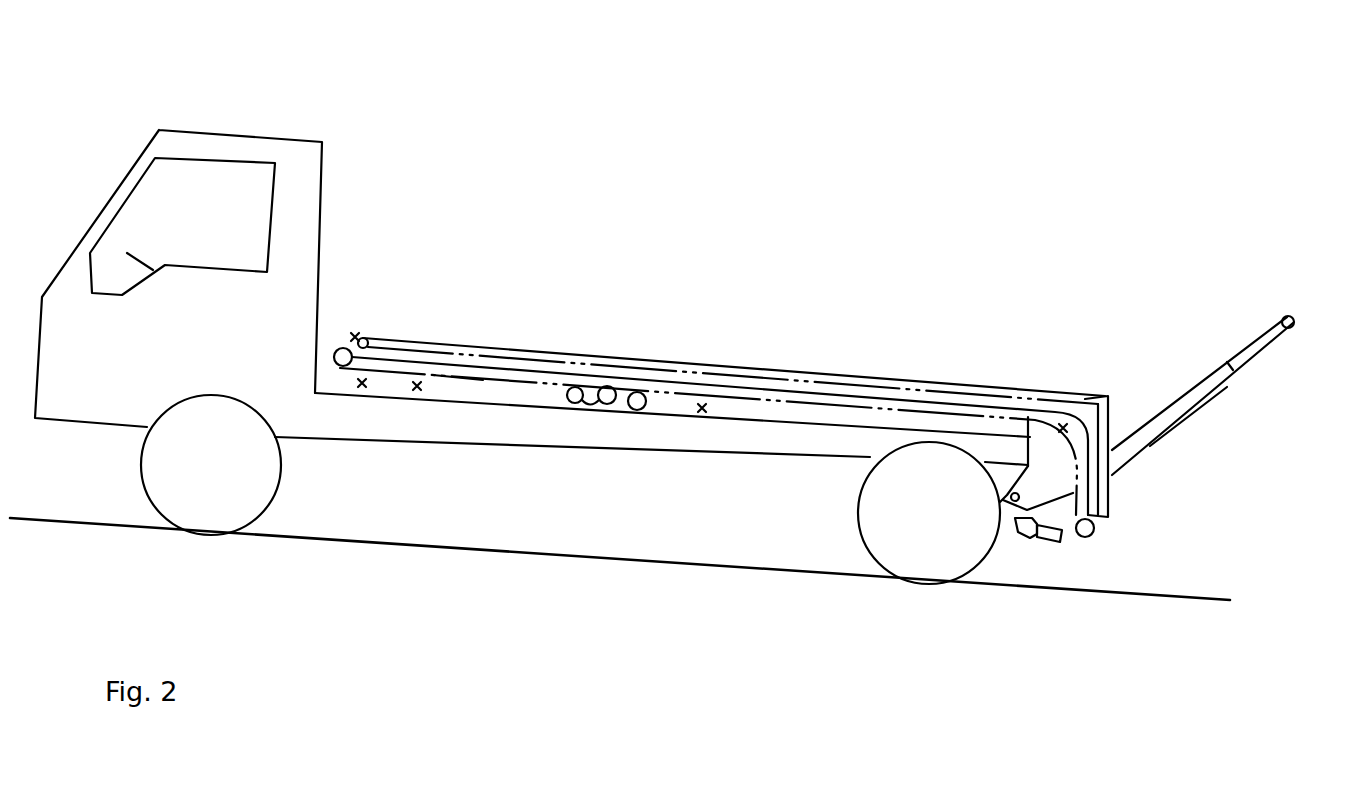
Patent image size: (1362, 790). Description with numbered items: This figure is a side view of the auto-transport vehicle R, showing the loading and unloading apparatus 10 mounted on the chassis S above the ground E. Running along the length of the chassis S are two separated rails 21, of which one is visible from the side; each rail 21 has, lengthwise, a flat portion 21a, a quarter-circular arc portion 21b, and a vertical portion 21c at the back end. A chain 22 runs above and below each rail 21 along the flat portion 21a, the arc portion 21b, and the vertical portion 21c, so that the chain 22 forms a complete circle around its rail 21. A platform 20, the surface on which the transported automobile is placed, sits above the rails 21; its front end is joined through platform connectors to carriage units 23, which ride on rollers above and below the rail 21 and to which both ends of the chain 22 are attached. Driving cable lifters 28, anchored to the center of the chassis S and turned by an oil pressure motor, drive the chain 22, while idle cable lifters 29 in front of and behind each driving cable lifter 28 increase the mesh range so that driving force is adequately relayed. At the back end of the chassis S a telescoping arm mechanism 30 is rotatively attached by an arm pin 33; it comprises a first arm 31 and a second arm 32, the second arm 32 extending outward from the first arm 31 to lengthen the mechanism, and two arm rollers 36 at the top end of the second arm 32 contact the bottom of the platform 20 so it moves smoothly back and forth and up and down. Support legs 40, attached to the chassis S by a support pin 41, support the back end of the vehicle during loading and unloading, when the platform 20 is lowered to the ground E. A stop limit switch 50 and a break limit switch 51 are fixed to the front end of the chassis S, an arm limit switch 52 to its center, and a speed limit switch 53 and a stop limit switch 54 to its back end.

The loading apparatus 10 is at (805, 342).
The platform 20 is at (967, 387).
The rail 21 is at (873, 387).
The flat portion 21a is at (735, 382).
The quarter-circular arc portion 21b is at (1072, 394).
The vertical portion 21c is at (1112, 477).
The chain 22 is at (491, 361).
The carriage unit 23 is at (355, 337).
The driving cable lifter 28 is at (607, 400).
The idle cable lifter 29 is at (640, 404).
The telescoping arm mechanism 30 is at (1198, 405).
The first arm 31 is at (1203, 387).
The second arm 32 is at (1255, 342).
The arm pin 33 is at (1007, 500).
The arm roller 36 is at (1294, 318).
The support leg 40 is at (1023, 528).
The support pin 41 is at (1050, 542).
The stop limit switch 50 is at (362, 388).
The break limit switch 51 is at (417, 390).
The arm limit switch 52 is at (702, 410).
The speed limit switch 53 is at (1063, 428).
The stop limit switch 54 is at (1097, 520).
The auto-transport vehicle R is at (302, 153).
The chassis S is at (335, 420).
The ground E is at (1197, 593).